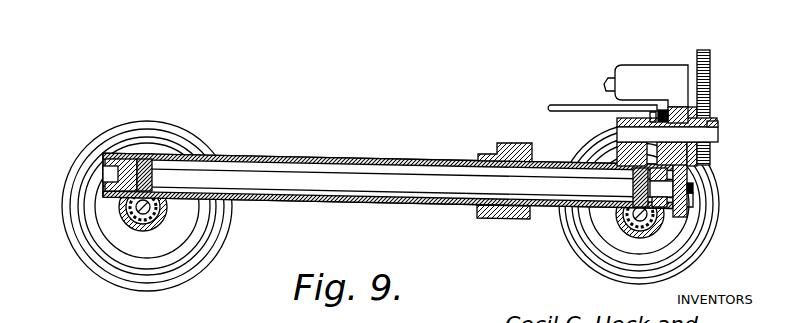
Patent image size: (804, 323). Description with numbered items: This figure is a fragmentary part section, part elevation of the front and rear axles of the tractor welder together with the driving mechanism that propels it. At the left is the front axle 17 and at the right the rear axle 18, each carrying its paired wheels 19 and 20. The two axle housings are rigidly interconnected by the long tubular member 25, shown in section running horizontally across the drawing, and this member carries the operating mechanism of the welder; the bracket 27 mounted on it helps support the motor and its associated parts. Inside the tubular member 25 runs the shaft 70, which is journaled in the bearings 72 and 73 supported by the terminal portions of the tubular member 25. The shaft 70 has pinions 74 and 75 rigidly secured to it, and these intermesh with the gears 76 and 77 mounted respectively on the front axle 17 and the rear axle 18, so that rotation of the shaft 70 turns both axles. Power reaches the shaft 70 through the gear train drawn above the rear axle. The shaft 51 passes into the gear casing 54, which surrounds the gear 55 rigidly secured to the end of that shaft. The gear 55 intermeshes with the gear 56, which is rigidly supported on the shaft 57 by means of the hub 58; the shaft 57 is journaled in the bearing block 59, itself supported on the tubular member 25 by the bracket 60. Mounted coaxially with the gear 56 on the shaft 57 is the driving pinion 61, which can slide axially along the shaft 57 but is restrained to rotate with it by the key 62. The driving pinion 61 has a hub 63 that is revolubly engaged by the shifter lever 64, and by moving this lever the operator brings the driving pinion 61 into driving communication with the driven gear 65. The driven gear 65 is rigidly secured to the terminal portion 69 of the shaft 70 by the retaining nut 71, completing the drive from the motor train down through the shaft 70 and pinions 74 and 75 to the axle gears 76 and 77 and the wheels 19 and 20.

The front axle 17 is at (137, 213).
The rear axle 18 is at (632, 233).
The wheels 19 is at (592, 235).
The wheels 20 is at (97, 232).
The tubular member 25 is at (543, 161).
The bracket 27 is at (500, 220).
The shaft 51 is at (608, 86).
The gear casing 54 is at (657, 68).
The gear 55 is at (707, 50).
The gear 56 is at (700, 110).
The shaft 57 is at (718, 134).
The hub 58 is at (710, 125).
The bearing block 59 is at (617, 122).
The bracket 60 is at (620, 157).
The driving pinion 61 is at (678, 107).
The key 62 is at (652, 119).
The hub 63 is at (667, 110).
The shifter lever 64 is at (572, 105).
The driven gear 65 is at (679, 218).
The terminal portion 69 is at (690, 188).
The shaft 70 is at (393, 178).
The retaining nut 71 is at (690, 197).
The bearing 72 is at (687, 207).
The bearing 73 is at (107, 158).
The pinion 74 is at (173, 157).
The pinion 75 is at (623, 177).
The gear 76 is at (150, 217).
The gear 77 is at (643, 232).